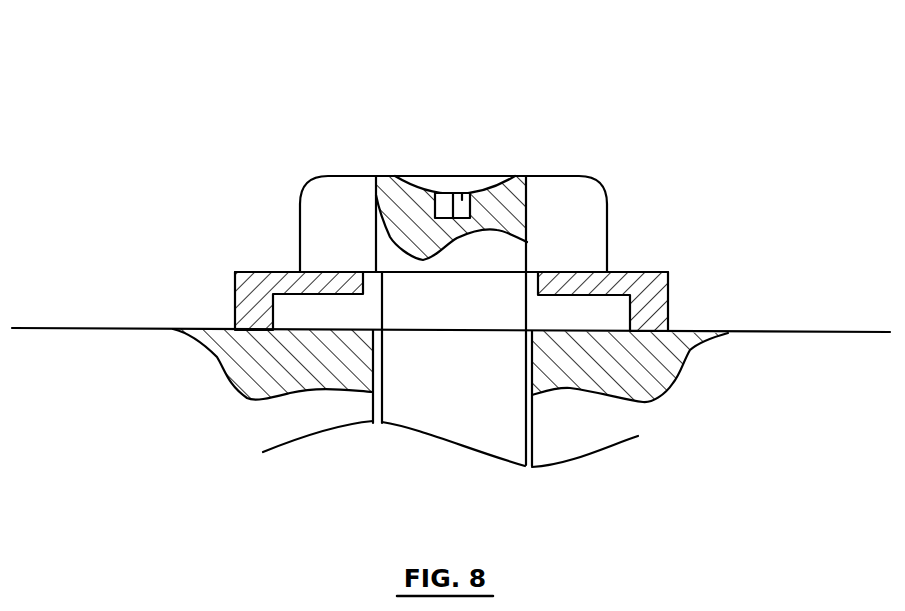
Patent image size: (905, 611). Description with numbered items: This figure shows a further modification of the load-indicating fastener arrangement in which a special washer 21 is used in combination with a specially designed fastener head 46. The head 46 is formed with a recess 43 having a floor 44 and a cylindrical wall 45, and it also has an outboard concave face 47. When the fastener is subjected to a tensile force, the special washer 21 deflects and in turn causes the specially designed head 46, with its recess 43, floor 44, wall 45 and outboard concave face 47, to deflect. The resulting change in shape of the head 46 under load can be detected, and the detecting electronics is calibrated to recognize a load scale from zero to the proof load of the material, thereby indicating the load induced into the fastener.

The special washer 21 is at (668, 305).
The recess 43 is at (445, 203).
The floor 44 is at (453, 205).
The wall 45 is at (462, 200).
The specially designed head 46 is at (607, 208).
The outboard concave face 47 is at (482, 194).